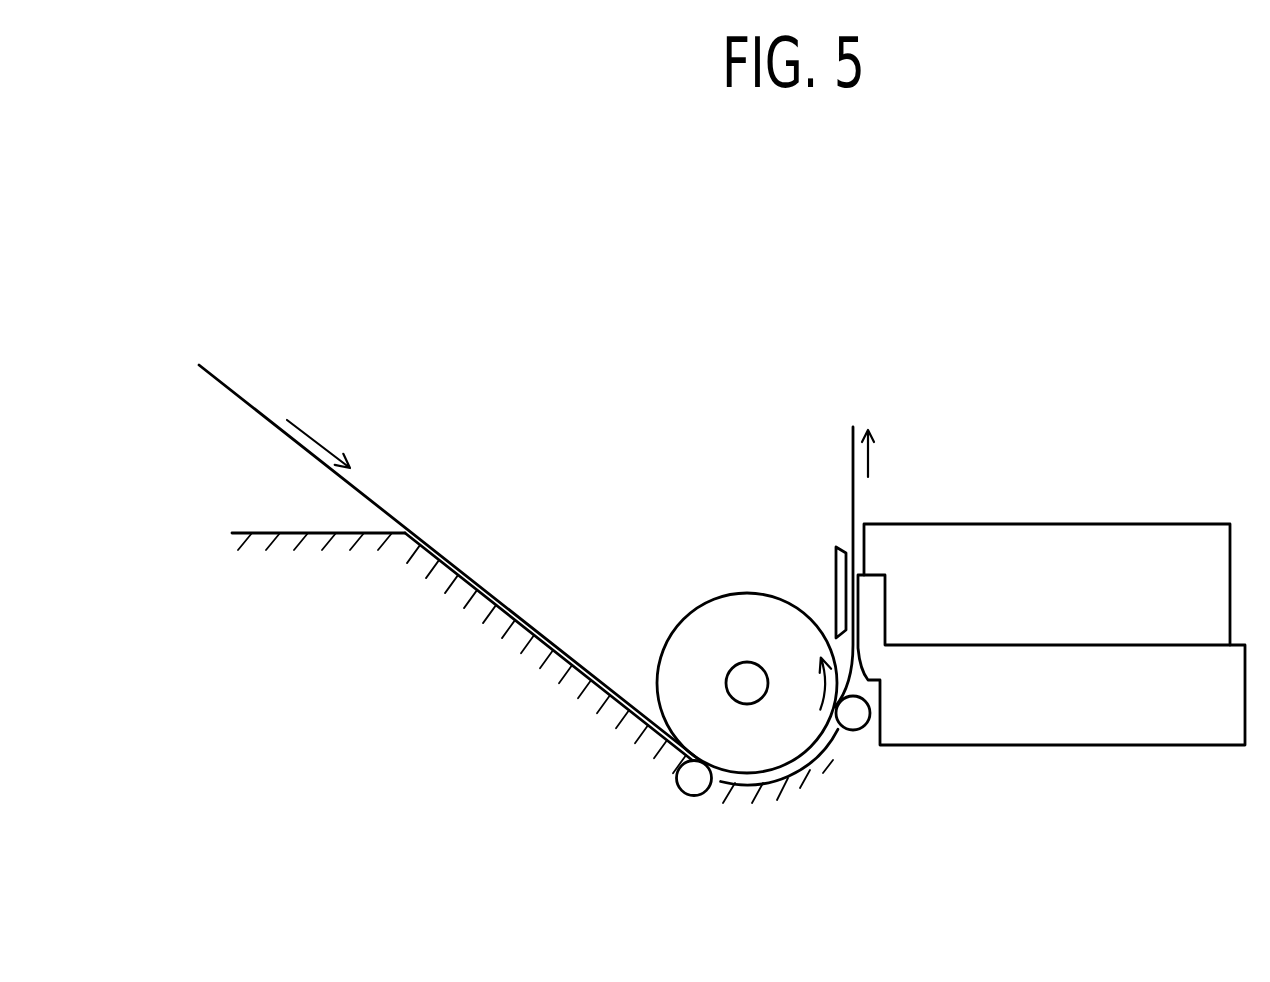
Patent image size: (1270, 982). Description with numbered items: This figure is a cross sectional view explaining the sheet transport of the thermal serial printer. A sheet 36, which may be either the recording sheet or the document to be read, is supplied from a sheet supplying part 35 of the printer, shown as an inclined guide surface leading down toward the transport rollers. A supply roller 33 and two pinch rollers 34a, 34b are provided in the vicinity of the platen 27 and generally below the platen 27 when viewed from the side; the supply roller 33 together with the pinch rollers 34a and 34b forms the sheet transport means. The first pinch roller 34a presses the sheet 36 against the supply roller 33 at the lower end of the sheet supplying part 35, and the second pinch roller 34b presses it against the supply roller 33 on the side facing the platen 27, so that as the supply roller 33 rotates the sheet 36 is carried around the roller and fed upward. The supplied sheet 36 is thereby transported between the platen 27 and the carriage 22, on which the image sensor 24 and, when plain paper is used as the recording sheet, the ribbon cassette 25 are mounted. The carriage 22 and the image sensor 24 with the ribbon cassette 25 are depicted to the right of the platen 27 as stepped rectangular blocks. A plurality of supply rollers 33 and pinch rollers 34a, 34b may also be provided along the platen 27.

The carriage 22 is at (1110, 730).
The image sensor 24 is at (1047, 538).
The ribbon cassette 25 is at (1055, 535).
The platen 27 is at (836, 553).
The supply roller 33 is at (693, 610).
The pinch roller 34a is at (693, 792).
The pinch roller 34b is at (857, 728).
The sheet supplying part 35 is at (463, 592).
The sheet 36 is at (228, 387).